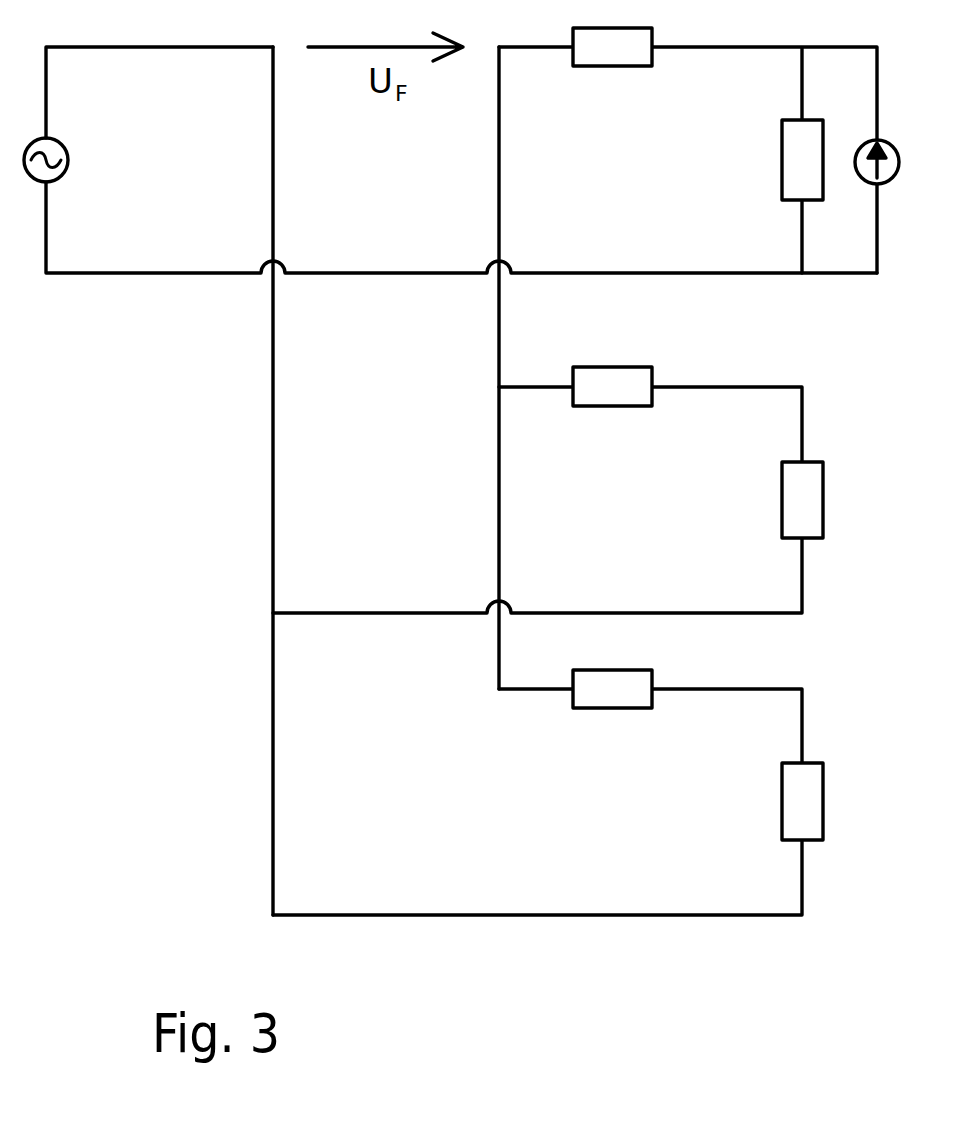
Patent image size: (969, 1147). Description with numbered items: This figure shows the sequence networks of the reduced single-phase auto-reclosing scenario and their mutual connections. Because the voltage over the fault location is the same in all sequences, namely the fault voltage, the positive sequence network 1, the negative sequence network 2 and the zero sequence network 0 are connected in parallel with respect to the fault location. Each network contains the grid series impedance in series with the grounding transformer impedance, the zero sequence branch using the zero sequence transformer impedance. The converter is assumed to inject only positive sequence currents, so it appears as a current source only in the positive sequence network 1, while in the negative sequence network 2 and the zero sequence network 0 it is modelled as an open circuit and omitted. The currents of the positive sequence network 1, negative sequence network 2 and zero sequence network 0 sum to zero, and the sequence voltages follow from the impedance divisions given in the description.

The positive sequence network 1 is at (703, 225).
The negative sequence network 2 is at (703, 569).
The zero sequence network 0 is at (703, 869).